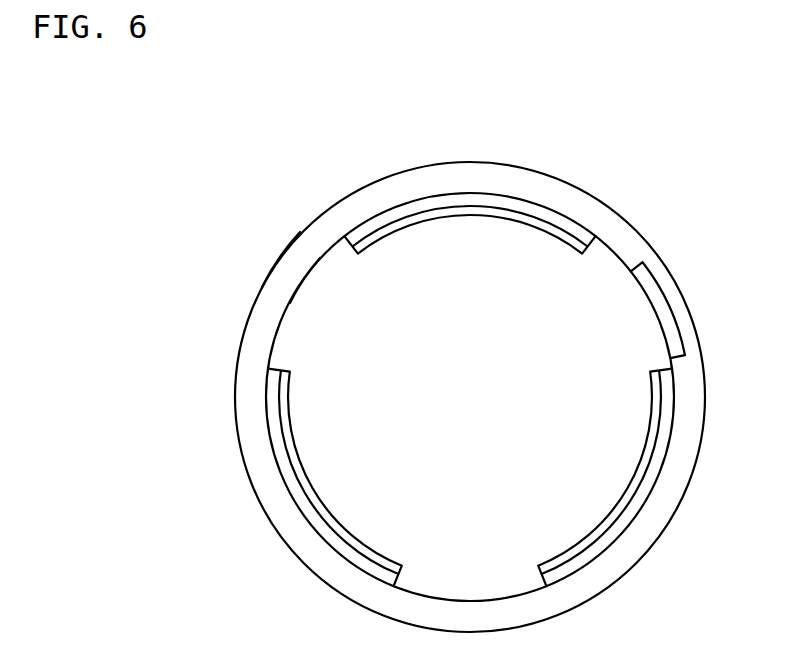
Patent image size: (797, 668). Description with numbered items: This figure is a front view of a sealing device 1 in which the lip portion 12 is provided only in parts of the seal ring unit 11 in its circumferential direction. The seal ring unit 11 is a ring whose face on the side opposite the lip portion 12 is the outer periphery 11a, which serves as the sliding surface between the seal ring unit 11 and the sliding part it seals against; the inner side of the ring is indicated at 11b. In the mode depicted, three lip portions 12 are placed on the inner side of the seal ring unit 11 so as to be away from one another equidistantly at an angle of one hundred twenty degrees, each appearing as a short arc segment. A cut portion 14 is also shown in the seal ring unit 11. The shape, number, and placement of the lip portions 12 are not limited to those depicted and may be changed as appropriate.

The sealing device 1 is at (612, 145).
The seal ring unit 11 is at (357, 203).
The outer periphery 11a is at (262, 287).
The inner peripheral surface 11b is at (290, 303).
The lip portion 12 is at (467, 215).
The cut portion 14 is at (677, 310).